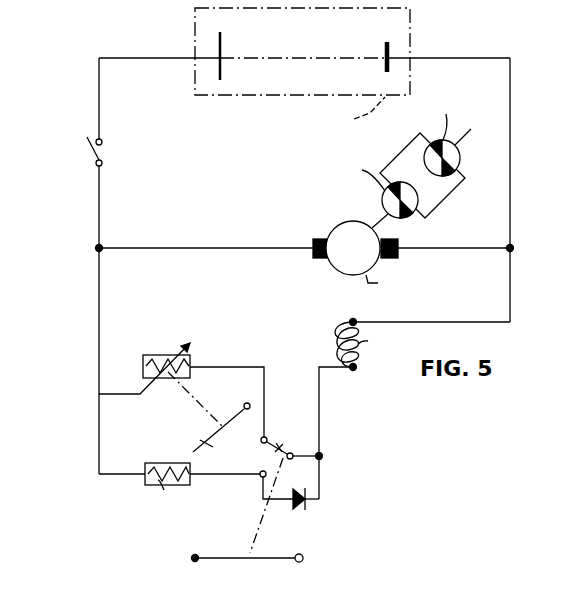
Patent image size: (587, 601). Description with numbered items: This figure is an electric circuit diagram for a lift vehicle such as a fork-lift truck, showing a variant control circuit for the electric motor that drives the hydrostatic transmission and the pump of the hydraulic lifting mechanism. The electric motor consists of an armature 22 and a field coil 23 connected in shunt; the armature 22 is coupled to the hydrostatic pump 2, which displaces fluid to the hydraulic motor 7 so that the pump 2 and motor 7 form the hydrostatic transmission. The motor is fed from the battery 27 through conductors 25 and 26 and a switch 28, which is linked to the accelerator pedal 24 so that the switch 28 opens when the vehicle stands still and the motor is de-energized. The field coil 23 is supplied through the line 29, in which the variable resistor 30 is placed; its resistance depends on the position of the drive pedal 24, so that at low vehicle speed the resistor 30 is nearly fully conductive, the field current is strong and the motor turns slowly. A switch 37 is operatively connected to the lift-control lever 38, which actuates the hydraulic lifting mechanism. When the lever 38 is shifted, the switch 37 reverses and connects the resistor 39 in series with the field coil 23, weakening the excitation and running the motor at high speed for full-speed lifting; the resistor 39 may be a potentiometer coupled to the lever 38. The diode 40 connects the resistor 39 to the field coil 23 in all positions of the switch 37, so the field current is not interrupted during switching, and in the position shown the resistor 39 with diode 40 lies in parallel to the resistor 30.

The hydrostatic pump 2 is at (400, 218).
The hydraulic motor 7 is at (461, 156).
The armature 22 is at (353, 210).
The field coil 23 is at (356, 369).
The accelerator pedal 24 is at (214, 425).
The conductor 25 is at (510, 161).
The conductor 26 is at (130, 58).
The battery 27 is at (249, 96).
The switch 28 is at (90, 146).
The line 29 is at (228, 367).
The variable resistor 30 is at (150, 355).
The switch 37 is at (282, 446).
The lift-control lever 38 is at (198, 556).
The resistor 39 is at (120, 520).
The diode 40 is at (298, 508).